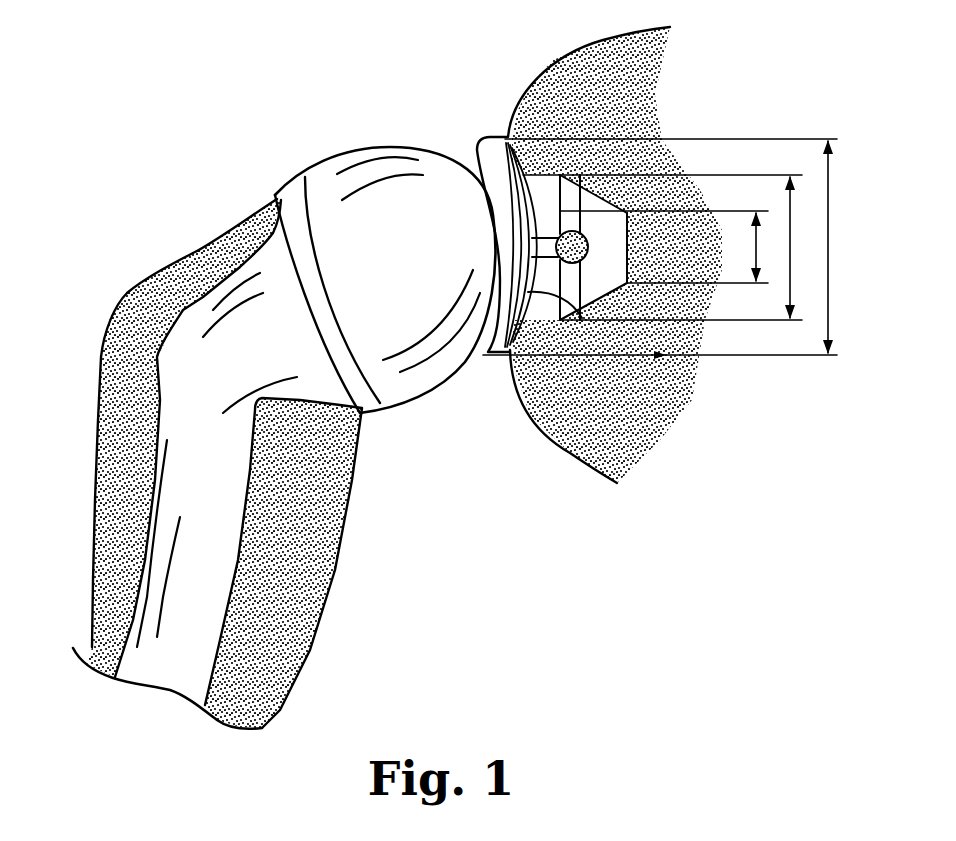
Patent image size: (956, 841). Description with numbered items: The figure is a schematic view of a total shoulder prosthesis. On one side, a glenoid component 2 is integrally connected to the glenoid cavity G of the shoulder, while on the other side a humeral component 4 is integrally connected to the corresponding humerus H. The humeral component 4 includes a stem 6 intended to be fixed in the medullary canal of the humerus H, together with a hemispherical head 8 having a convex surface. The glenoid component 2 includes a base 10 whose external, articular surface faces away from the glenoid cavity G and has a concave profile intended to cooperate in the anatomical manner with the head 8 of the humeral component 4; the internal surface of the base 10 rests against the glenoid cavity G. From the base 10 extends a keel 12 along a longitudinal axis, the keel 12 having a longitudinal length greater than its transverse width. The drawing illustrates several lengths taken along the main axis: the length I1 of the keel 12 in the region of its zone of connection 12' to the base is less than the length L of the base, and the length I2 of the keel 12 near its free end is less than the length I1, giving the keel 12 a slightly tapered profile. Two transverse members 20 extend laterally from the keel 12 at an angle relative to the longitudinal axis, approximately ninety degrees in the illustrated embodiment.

The glenoid component 2 is at (490, 118).
The humeral component 4 is at (196, 297).
The stem 6 is at (195, 545).
The hemispherical head 8 is at (337, 207).
The base 10 is at (493, 362).
The keel 12 is at (615, 255).
The zone of connection 12' is at (673, 386).
The transverse members 20 is at (532, 175).
The glenoid cavity G is at (527, 413).
The humerus H is at (307, 612).
The length of the base L is at (698, 246).
The length of the keel at the zone of connection I1 is at (662, 247).
The length of the keel at the free end I2 is at (664, 247).